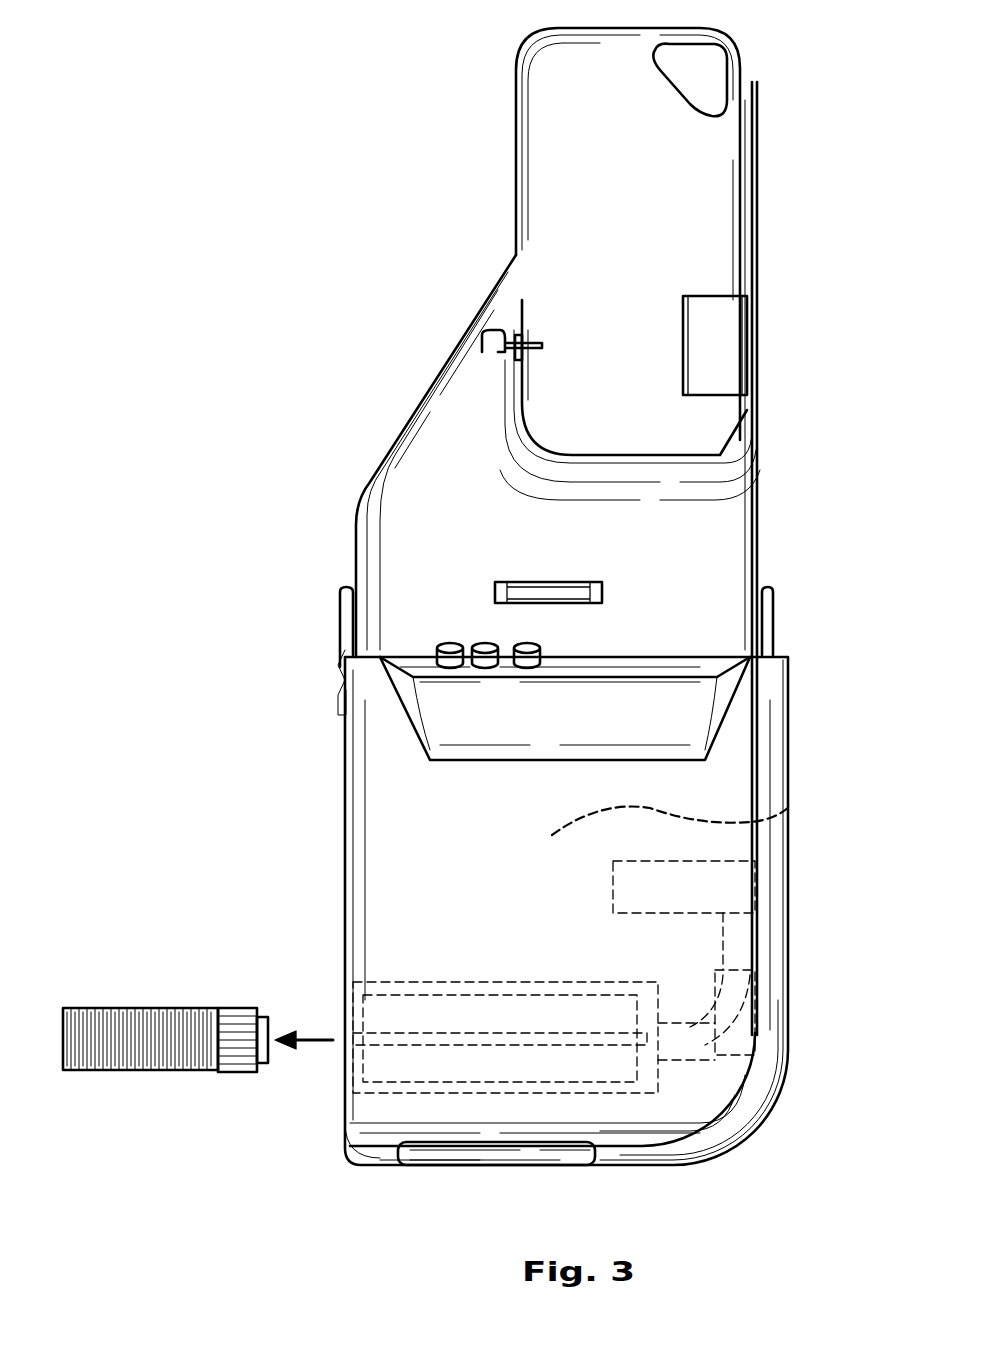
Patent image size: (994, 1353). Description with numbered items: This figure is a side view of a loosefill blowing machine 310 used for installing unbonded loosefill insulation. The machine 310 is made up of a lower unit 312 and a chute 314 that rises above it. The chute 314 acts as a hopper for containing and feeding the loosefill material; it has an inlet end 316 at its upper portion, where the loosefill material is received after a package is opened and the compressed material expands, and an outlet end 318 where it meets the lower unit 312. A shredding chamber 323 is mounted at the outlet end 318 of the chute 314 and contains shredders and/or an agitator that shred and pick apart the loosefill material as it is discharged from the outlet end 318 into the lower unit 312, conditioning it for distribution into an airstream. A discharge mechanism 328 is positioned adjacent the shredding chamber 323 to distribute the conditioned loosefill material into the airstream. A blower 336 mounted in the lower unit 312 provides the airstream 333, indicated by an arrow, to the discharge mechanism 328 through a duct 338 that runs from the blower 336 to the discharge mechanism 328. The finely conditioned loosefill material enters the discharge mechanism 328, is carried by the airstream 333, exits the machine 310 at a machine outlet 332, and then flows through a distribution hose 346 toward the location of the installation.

The loosefill blowing machine 310 is at (282, 124).
The lower unit 312 is at (322, 777).
The chute 314 is at (495, 166).
The inlet end 316 is at (690, 180).
The outlet end 318 is at (648, 655).
The shredding chamber 323 is at (790, 806).
The discharge mechanism 328 is at (393, 1095).
The machine outlet 332 is at (340, 1053).
The airstream 333 is at (318, 1040).
The blower 336 is at (735, 1037).
The duct 338 is at (690, 1055).
The distribution hose 346 is at (155, 1072).